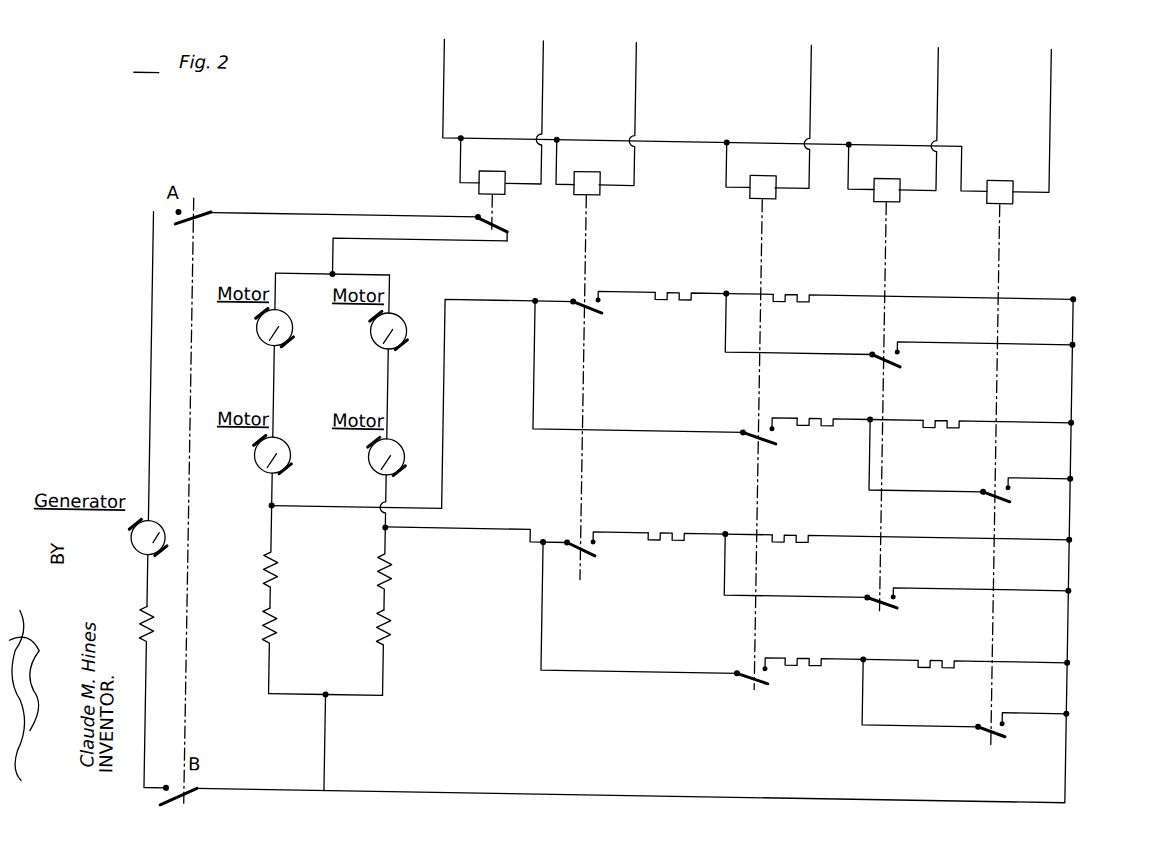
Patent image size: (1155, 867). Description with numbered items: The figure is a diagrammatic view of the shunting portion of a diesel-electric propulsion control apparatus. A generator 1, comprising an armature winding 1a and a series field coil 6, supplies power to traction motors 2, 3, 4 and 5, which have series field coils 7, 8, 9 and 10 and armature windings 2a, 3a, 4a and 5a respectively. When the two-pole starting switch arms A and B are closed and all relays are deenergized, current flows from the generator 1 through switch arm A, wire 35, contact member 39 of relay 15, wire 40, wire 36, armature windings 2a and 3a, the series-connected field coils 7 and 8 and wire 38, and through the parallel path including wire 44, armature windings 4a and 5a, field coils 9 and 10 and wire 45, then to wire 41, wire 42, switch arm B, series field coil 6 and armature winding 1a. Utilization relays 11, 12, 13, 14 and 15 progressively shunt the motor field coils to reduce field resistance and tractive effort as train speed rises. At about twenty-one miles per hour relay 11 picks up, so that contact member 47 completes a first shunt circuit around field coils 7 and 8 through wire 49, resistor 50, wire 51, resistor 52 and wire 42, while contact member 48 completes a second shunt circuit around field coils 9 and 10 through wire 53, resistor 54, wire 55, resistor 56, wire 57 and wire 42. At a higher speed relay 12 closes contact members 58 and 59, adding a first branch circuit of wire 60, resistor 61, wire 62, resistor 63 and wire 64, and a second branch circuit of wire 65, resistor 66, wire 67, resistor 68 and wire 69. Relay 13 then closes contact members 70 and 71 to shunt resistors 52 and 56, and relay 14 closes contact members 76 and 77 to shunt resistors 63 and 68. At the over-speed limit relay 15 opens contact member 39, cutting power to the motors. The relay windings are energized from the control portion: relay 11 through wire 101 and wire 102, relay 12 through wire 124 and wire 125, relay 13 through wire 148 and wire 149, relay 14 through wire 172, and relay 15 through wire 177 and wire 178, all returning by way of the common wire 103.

The generator 1 is at (134, 541).
The armature winding 1a is at (167, 537).
The traction motor 2 is at (255, 322).
The armature winding 2a is at (270, 336).
The traction motor 3 is at (255, 445).
The armature winding 3a is at (270, 462).
The traction motor 4 is at (369, 324).
The armature winding 4a is at (384, 337).
The traction motor 5 is at (369, 446).
The armature winding 5a is at (384, 462).
The series field coil 6 is at (163, 640).
The series field coil 7 is at (301, 565).
The series field coil 8 is at (300, 629).
The series field coil 9 is at (407, 565).
The series field coil 10 is at (408, 631).
The utilization relay 11 is at (590, 162).
The utilization relay 12 is at (759, 163).
The utilization relay 13 is at (883, 164).
The utilization relay 14 is at (996, 164).
The over-speed relay 15 is at (490, 163).
The wire 35 is at (279, 210).
The wire 36 is at (306, 265).
The wire 38 is at (283, 672).
The contact member 39 is at (513, 216).
The wire 40 is at (408, 209).
The wire 41 is at (340, 742).
The wire 42 is at (966, 273).
The wire 44 is at (360, 268).
The wire 45 is at (397, 673).
The contact member 47 is at (585, 288).
The contact member 48 is at (587, 525).
The wire 49 is at (500, 291).
The resistor 50 is at (688, 270).
The wire 51 is at (765, 271).
The resistor 52 is at (818, 270).
The wire 53 is at (509, 516).
The resistor 54 is at (689, 515).
The wire 55 is at (776, 514).
The resistor 56 is at (792, 516).
The wire 57 is at (936, 516).
The contact member 58 is at (767, 415).
The contact member 59 is at (760, 653).
The wire 60 is at (652, 414).
The resistor 61 is at (834, 395).
The wire 62 is at (907, 394).
The resistor 63 is at (967, 393).
The wire 64 is at (1044, 396).
The wire 65 is at (676, 655).
The resistor 66 is at (829, 639).
The wire 67 is at (914, 637).
The resistor 68 is at (957, 644).
The wire 69 is at (1003, 643).
The contact member 70 is at (891, 329).
The contact member 71 is at (886, 576).
The contact member 76 is at (1012, 466).
The contact member 77 is at (1008, 704).
The wire 101 is at (637, 61).
The wire 102 is at (562, 165).
The wire 103 is at (445, 63).
The wire 124 is at (812, 62).
The wire 125 is at (729, 153).
The wire 148 is at (939, 63).
The wire 149 is at (851, 154).
The wire 172 is at (1052, 72).
The wire 177 is at (544, 62).
The wire 178 is at (461, 152).